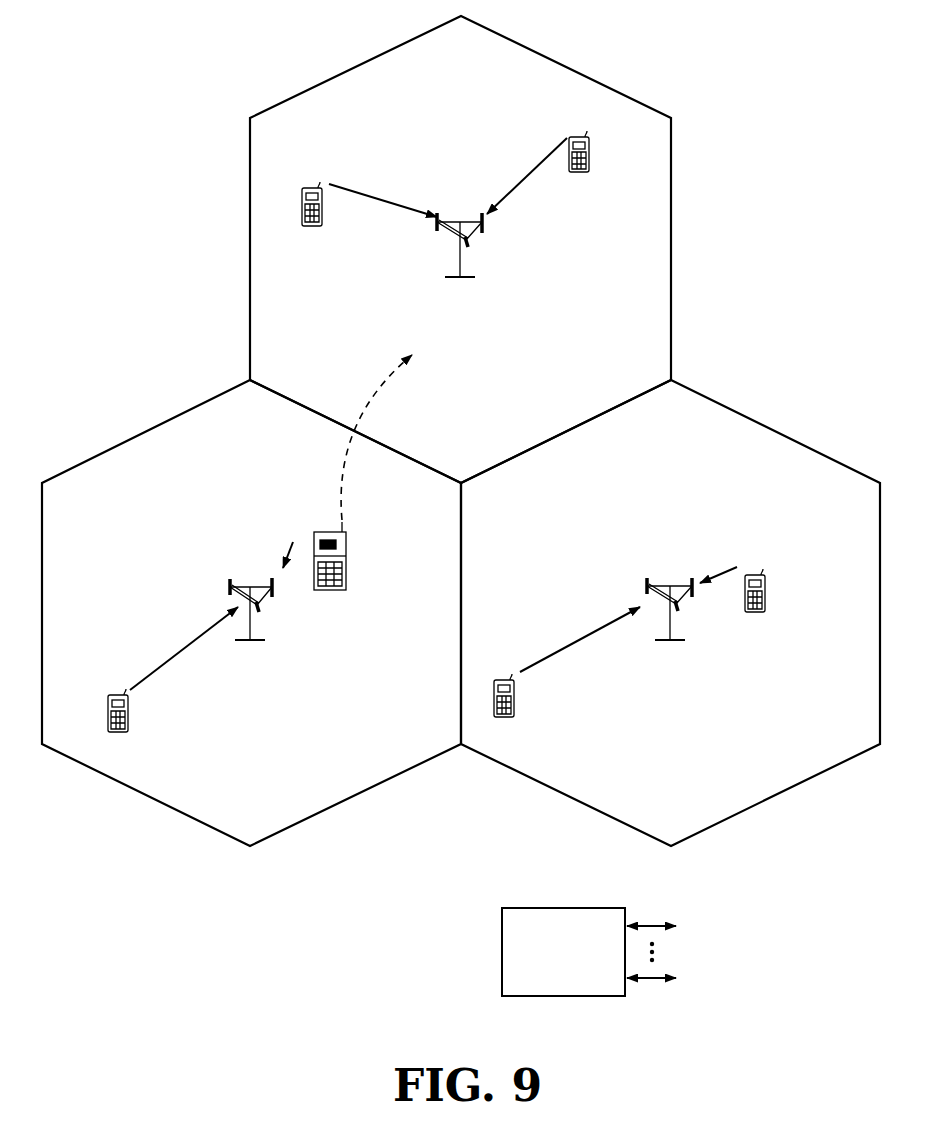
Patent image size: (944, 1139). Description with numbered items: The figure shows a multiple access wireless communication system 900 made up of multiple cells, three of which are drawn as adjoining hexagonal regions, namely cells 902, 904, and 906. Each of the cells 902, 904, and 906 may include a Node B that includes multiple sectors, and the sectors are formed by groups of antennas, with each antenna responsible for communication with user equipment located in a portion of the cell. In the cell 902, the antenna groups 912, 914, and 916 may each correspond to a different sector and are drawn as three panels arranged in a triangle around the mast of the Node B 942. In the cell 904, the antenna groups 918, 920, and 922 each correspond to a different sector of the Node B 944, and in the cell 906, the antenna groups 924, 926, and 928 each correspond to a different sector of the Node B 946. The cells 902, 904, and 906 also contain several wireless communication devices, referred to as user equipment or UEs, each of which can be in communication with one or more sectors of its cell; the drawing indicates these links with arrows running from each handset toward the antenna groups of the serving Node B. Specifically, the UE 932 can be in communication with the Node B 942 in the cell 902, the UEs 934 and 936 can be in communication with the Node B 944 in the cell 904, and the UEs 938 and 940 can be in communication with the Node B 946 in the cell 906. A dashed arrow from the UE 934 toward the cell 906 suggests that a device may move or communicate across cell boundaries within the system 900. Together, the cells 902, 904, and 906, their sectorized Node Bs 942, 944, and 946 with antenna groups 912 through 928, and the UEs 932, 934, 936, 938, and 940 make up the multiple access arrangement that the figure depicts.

The multiple access wireless communication system 900 is at (780, 86).
The cell 902 is at (694, 423).
The cell 904 is at (443, 518).
The cell 906 is at (296, 378).
The antenna group 912 is at (647, 582).
The antenna group 914 is at (680, 608).
The antenna group 916 is at (695, 594).
The antenna group 918 is at (262, 611).
The antenna group 920 is at (275, 593).
The antenna group 922 is at (230, 583).
The antenna group 924 is at (437, 232).
The antenna group 926 is at (468, 246).
The antenna group 928 is at (485, 231).
The user equipment 932 is at (503, 674).
The user equipment 934 is at (318, 528).
The user equipment 936 is at (113, 691).
The user equipment 938 is at (306, 187).
The user equipment 940 is at (585, 131).
The Node B 942 is at (683, 600).
The Node B 944 is at (251, 602).
The Node B 946 is at (471, 242).